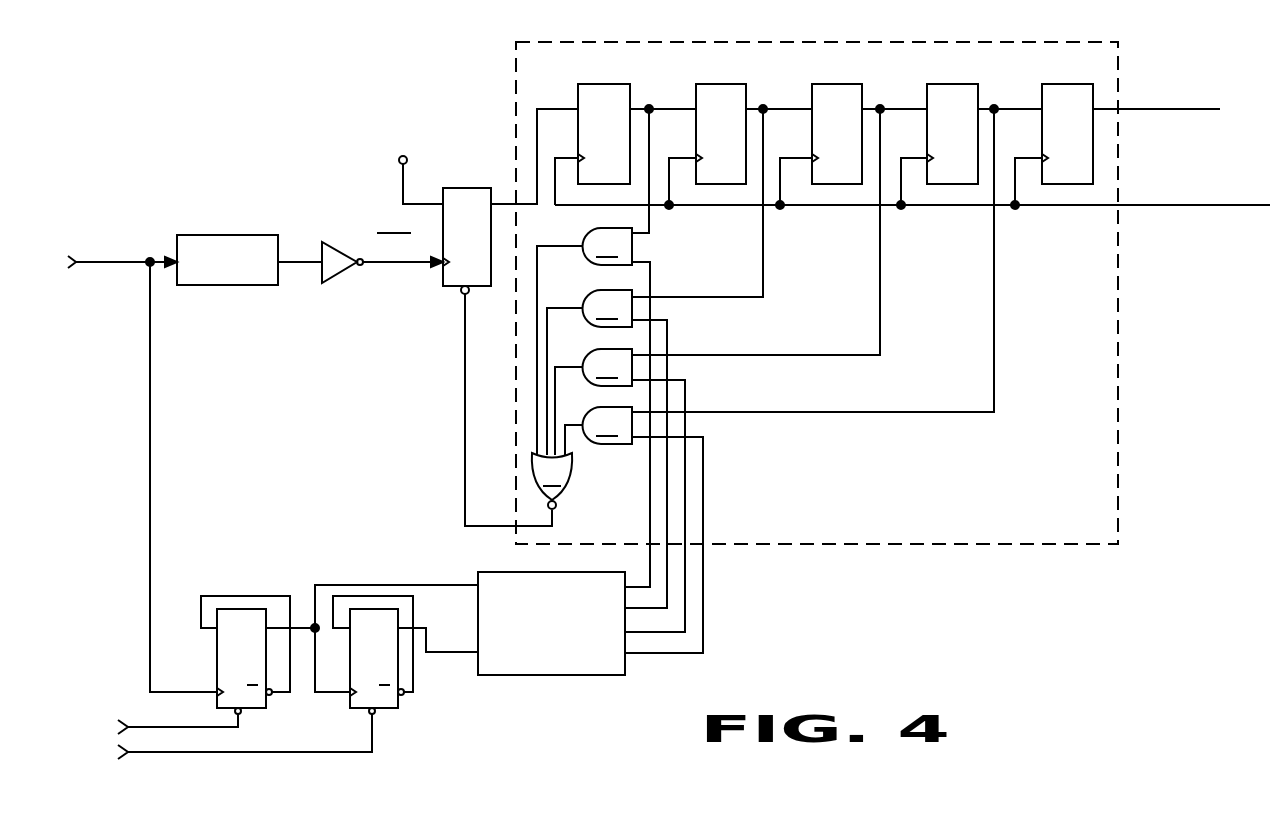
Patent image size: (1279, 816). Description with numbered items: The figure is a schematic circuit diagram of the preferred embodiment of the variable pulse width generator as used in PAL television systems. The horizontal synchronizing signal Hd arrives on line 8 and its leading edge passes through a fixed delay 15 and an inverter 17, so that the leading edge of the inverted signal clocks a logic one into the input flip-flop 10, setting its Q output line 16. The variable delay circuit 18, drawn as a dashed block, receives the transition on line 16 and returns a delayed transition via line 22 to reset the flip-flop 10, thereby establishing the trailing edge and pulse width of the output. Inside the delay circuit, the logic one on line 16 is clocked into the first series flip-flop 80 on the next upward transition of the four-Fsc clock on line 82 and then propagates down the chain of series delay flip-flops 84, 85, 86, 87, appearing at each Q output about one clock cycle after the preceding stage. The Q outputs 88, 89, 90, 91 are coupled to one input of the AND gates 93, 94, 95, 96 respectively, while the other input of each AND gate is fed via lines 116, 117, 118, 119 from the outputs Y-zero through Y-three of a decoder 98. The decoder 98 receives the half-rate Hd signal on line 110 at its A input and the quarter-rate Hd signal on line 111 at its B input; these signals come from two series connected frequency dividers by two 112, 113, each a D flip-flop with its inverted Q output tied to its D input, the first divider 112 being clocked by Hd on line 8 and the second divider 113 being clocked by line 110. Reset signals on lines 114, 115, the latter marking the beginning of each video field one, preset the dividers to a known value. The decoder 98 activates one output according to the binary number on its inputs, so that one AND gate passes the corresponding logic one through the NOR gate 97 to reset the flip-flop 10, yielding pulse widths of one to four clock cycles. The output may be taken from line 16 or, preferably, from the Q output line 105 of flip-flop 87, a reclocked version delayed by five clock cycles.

The line 8 is at (95, 269).
The input flip-flop 10 is at (462, 188).
The delay 15 is at (225, 235).
The Q output line 16 is at (537, 120).
The inverter 17 is at (341, 245).
The variable delay circuit 18 is at (1118, 298).
The line 22 is at (465, 327).
The first series flip-flop 80 is at (600, 84).
The line 82 is at (1090, 207).
The series delay flip-flop 84 is at (715, 84).
The series delay flip-flop 85 is at (830, 84).
The series delay flip-flop 86 is at (945, 84).
The series delay flip-flop 87 is at (1060, 84).
The Q output 88 is at (650, 222).
The Q output 89 is at (763, 280).
The Q output 90 is at (880, 346).
The Q output 91 is at (994, 401).
The AND gate 93 is at (584, 341).
The AND gate 94 is at (589, 372).
The AND gate 95 is at (593, 402).
The AND gate 96 is at (598, 431).
The NOR gate 97 is at (552, 481).
The decoder 98 is at (552, 665).
The Q output line 105 is at (1128, 109).
The line 110 is at (356, 585).
The line 111 is at (440, 655).
The frequency divider by two 112 is at (247, 609).
The frequency divider by two 113 is at (388, 708).
The line 114 is at (128, 722).
The line 115 is at (128, 752).
The line 116 is at (650, 564).
The line 117 is at (667, 589).
The line 118 is at (685, 611).
The line 119 is at (703, 640).